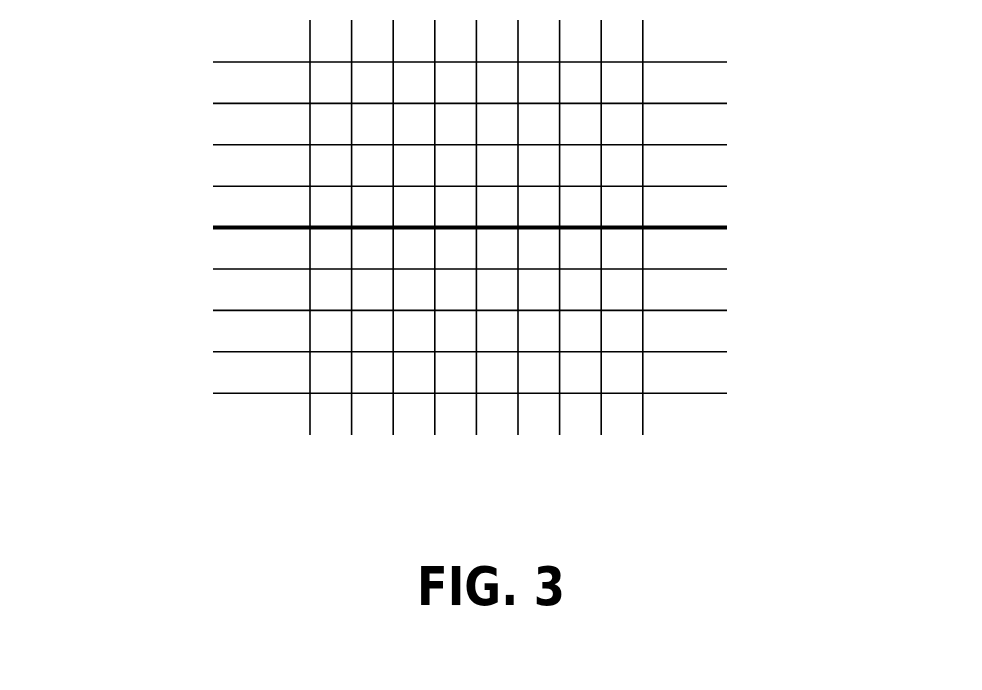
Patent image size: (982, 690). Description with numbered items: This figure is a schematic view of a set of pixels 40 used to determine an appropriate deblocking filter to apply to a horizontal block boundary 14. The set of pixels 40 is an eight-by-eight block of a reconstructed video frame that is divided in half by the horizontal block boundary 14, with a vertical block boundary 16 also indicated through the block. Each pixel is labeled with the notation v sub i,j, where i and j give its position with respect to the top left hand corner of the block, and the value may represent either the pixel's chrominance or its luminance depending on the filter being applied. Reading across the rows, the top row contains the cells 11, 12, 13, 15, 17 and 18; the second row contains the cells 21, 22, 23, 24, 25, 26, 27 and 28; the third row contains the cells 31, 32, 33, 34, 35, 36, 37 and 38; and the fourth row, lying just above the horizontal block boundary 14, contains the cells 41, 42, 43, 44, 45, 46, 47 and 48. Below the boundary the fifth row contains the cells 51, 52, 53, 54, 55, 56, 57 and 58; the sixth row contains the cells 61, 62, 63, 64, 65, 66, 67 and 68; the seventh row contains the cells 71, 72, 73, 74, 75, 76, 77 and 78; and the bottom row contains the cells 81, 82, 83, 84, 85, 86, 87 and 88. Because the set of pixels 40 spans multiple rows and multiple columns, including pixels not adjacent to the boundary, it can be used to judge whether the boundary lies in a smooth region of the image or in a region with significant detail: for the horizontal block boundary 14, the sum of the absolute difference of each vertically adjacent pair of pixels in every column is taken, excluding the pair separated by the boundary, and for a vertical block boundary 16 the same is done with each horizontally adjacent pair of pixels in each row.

The horizontal block boundary 14 is at (687, 225).
The set of pixels 40 is at (388, 242).
The cell V11 11 is at (332, 82).
The cell V12 12 is at (374, 82).
The cell V13 13 is at (415, 82).
The cell V15 15 is at (498, 82).
The vertical block boundary 16 is at (540, 82).
The cell V17 17 is at (582, 82).
The cell V18 18 is at (623, 82).
The cell V21 21 is at (332, 123).
The cell V22 22 is at (374, 123).
The cell V23 23 is at (415, 123).
The cell V24 24 is at (457, 123).
The cell V25 25 is at (498, 123).
The cell V26 26 is at (540, 123).
The cell V27 27 is at (582, 123).
The cell V28 28 is at (623, 123).
The cell V31 31 is at (332, 165).
The cell V32 32 is at (374, 165).
The cell V33 33 is at (415, 165).
The cell V34 34 is at (457, 165).
The cell V35 35 is at (498, 165).
The cell V36 36 is at (540, 165).
The cell V37 37 is at (582, 165).
The cell V38 38 is at (623, 165).
The cell V41 41 is at (332, 206).
The cell V42 42 is at (374, 206).
The cell V43 43 is at (415, 206).
The cell V44 44 is at (457, 206).
The cell V45 45 is at (498, 206).
The cell V46 46 is at (540, 206).
The cell V47 47 is at (582, 206).
The cell V48 48 is at (623, 206).
The cell V51 51 is at (332, 248).
The cell V52 52 is at (374, 248).
The cell V53 53 is at (415, 248).
The cell V54 54 is at (457, 248).
The cell V55 55 is at (498, 248).
The cell V56 56 is at (540, 248).
The cell V57 57 is at (582, 248).
The cell V58 58 is at (623, 248).
The cell V61 61 is at (332, 289).
The cell V62 62 is at (374, 289).
The cell V63 63 is at (415, 289).
The cell V64 64 is at (457, 289).
The cell V65 65 is at (498, 289).
The cell V66 66 is at (540, 289).
The cell V67 67 is at (582, 289).
The cell V68 68 is at (623, 289).
The cell V71 71 is at (332, 330).
The cell V72 72 is at (374, 330).
The cell V73 73 is at (415, 330).
The cell V74 74 is at (457, 330).
The cell V75 75 is at (498, 330).
The cell V76 76 is at (540, 330).
The cell V77 77 is at (582, 330).
The cell V78 78 is at (623, 330).
The cell V81 81 is at (332, 372).
The cell V82 82 is at (374, 372).
The cell V83 83 is at (415, 372).
The cell V84 84 is at (457, 372).
The cell V85 85 is at (498, 372).
The cell V86 86 is at (540, 372).
The cell V87 87 is at (582, 372).
The cell V88 88 is at (623, 372).